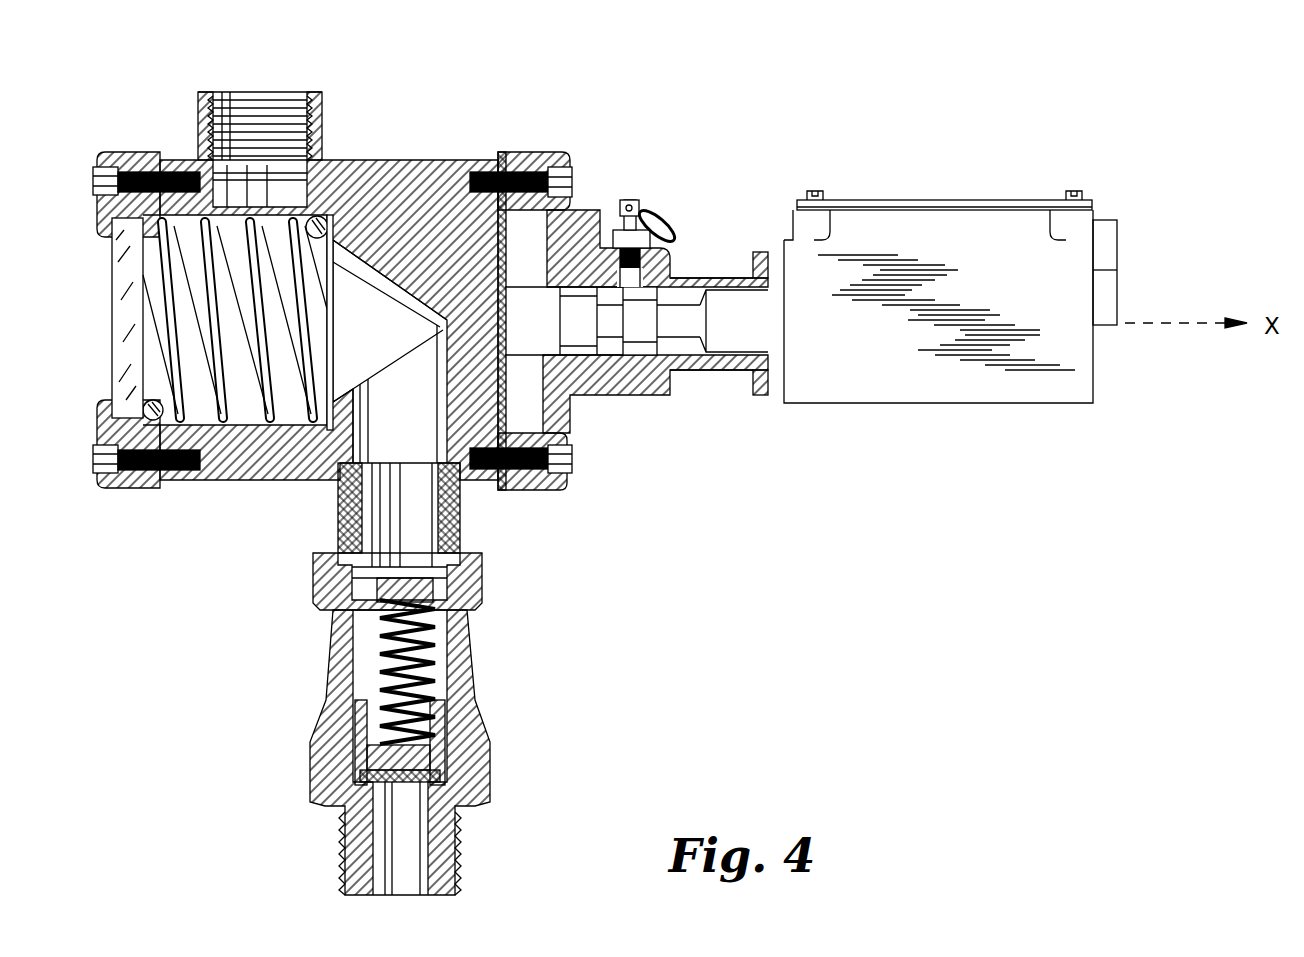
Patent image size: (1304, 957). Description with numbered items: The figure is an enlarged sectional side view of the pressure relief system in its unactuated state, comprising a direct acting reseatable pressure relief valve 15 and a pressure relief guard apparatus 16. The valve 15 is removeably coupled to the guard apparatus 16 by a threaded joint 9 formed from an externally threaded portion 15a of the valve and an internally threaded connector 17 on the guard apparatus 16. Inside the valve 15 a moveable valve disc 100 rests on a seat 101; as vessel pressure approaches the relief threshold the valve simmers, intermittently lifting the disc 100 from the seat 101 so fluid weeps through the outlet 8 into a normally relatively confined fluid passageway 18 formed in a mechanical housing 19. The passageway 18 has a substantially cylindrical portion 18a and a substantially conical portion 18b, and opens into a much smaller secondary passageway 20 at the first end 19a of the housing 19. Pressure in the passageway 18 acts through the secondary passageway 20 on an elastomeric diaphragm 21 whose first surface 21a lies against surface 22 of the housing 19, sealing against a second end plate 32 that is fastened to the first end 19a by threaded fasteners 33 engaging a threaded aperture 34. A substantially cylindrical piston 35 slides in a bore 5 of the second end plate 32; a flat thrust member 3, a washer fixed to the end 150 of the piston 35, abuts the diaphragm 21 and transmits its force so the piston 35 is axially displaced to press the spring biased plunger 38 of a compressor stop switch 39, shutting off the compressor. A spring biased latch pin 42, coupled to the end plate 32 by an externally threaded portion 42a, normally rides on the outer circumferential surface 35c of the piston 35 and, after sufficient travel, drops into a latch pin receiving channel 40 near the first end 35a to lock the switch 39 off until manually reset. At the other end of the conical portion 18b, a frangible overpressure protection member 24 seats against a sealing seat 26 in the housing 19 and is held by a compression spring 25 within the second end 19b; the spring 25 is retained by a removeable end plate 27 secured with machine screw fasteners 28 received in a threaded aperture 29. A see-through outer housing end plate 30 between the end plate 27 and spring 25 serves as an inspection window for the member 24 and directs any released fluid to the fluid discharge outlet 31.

The thrust member 3 is at (567, 262).
The bore 5 is at (612, 293).
The outlet 8 is at (480, 558).
The threaded joint 9 is at (460, 536).
The pressure relief valve 15 is at (416, 679).
The externally threaded portion 15a is at (338, 550).
The pressure relief guard apparatus 16 is at (185, 480).
The internally threaded connector 17 is at (338, 508).
The normally relatively confined fluid passageway 18 is at (395, 446).
The substantially cylindrical portion 18a is at (397, 422).
The substantially conical portion 18b is at (385, 343).
The mechanical housing 19 is at (447, 183).
The first end 19a is at (477, 185).
The second end 19b is at (150, 160).
The secondary passageway 20 is at (532, 152).
The elastomeric diaphragm 21 is at (510, 232).
The first surface 21a is at (532, 490).
The surface 22 is at (555, 390).
The overpressure protection member 24 is at (302, 480).
The compression spring 25 is at (320, 215).
The sealing seat 26 is at (400, 190).
The removeable end plate 27 is at (100, 412).
The fasteners 28 is at (93, 182).
The threaded aperture 29 is at (128, 152).
The outer housing end plate 30 is at (112, 278).
The fluid discharge outlet 31 is at (296, 93).
The second end plate 32 is at (545, 160).
The fasteners 33 is at (575, 185).
The threaded aperture 34 is at (560, 490).
The piston 35 is at (538, 325).
The first end 35a is at (683, 312).
The outer circumferential surface 35c is at (720, 392).
The plunger 38 is at (715, 285).
The compressor stop switch 39 is at (1005, 245).
The latch pin receiving channel 40 is at (636, 355).
The spring biased latch pin 42 is at (633, 200).
The externally threaded portion 42a is at (670, 233).
The valve disc 100 is at (435, 763).
The seat 101 is at (357, 777).
The end 150 is at (575, 395).